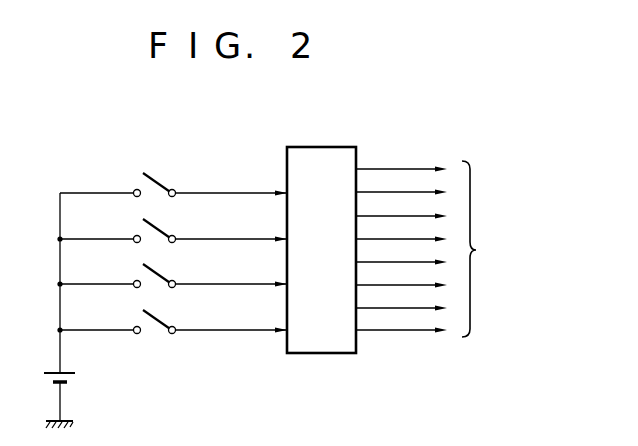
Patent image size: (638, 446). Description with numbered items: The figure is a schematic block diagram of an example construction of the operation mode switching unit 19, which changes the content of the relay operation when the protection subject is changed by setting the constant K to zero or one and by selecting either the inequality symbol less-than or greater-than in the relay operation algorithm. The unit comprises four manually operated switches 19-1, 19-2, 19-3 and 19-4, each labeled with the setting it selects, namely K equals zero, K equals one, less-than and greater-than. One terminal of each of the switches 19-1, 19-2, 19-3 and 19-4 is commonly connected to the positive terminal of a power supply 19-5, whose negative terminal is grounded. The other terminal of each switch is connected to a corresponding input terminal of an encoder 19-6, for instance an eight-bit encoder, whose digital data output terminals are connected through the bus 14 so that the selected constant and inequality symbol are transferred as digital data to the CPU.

The operation mode switching unit 19 is at (241, 377).
The switch 19-1 is at (143, 319).
The switch 19-2 is at (143, 273).
The switch 19-3 is at (143, 228).
The switch 19-4 is at (143, 182).
The power supply 19-5 is at (79, 381).
The encoder 19-6 is at (317, 347).
The bus 14 is at (450, 249).